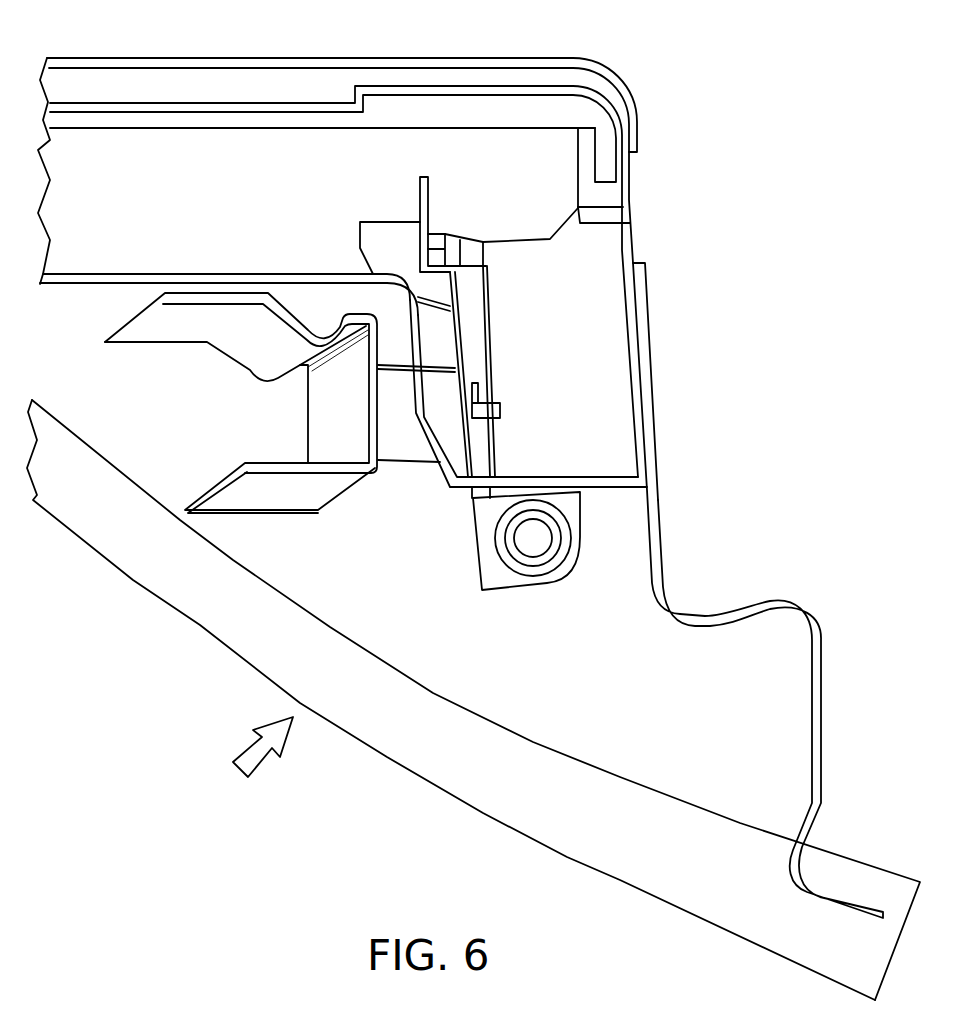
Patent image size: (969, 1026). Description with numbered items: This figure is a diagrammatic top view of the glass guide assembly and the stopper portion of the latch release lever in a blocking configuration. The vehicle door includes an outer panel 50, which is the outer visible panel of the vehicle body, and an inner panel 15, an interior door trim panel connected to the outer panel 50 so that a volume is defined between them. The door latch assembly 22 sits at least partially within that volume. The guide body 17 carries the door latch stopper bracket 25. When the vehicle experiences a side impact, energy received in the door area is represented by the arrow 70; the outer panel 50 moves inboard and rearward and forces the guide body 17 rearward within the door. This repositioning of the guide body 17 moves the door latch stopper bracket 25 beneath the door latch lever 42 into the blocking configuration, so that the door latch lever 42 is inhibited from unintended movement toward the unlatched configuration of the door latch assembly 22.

The inner panel 15 is at (267, 102).
The door latch assembly 22 is at (503, 160).
The guide body 17 is at (210, 414).
The door latch stopper bracket 25 is at (406, 478).
The door latch lever 42 is at (490, 592).
The outer panel 50 is at (402, 738).
The arrow 70 is at (245, 768).